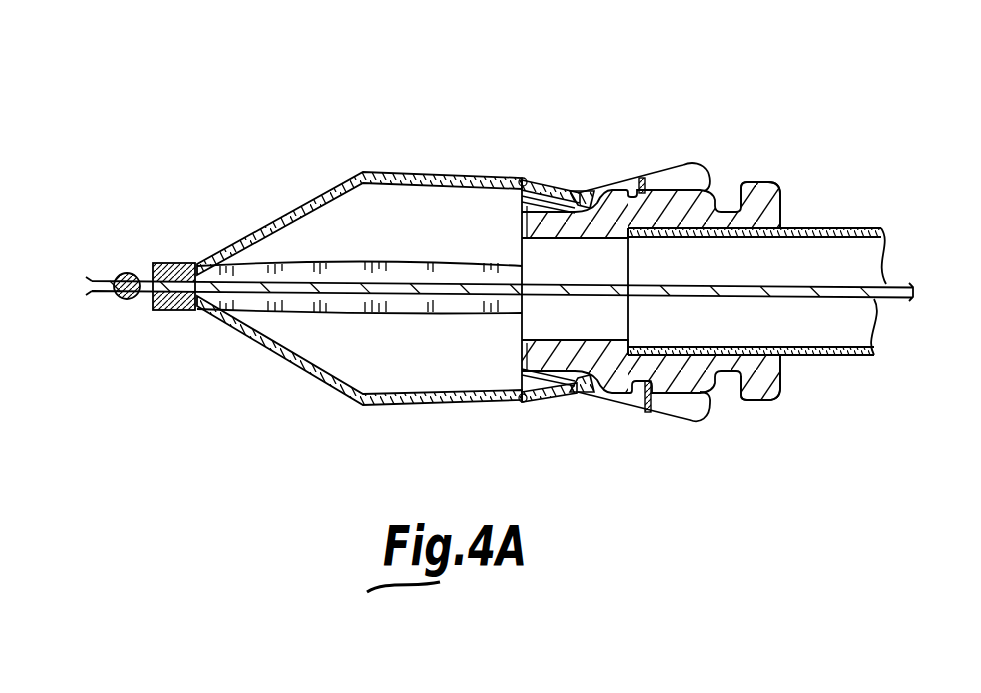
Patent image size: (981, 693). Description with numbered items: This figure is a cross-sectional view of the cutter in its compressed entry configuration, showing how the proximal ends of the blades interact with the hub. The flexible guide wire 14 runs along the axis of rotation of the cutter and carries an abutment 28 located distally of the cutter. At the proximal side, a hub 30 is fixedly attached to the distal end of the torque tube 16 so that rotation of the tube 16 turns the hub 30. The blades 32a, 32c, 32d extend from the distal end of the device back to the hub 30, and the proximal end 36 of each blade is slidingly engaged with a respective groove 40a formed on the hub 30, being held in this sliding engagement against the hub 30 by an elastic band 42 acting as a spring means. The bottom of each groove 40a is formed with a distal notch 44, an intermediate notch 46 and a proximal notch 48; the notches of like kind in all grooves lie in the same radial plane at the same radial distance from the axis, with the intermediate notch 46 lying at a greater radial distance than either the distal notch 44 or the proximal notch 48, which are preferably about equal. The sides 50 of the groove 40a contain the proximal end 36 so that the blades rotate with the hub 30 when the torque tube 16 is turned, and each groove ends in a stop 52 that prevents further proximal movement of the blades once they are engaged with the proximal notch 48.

The flexible guide wire 14 is at (907, 300).
The torque tube 16 is at (818, 228).
The abutment 28 is at (123, 273).
The hub 30 is at (657, 417).
The blade 32a is at (303, 205).
The blade 32c is at (312, 378).
The blade 32d is at (260, 312).
The proximal end 36 is at (573, 187).
The groove 40a is at (683, 167).
The elastic band 42 is at (523, 178).
The distal notch 44 is at (593, 187).
The intermediate notch 46 is at (633, 177).
The proximal notch 48 is at (732, 210).
The sides 50 is at (697, 180).
The stop 52 is at (733, 387).